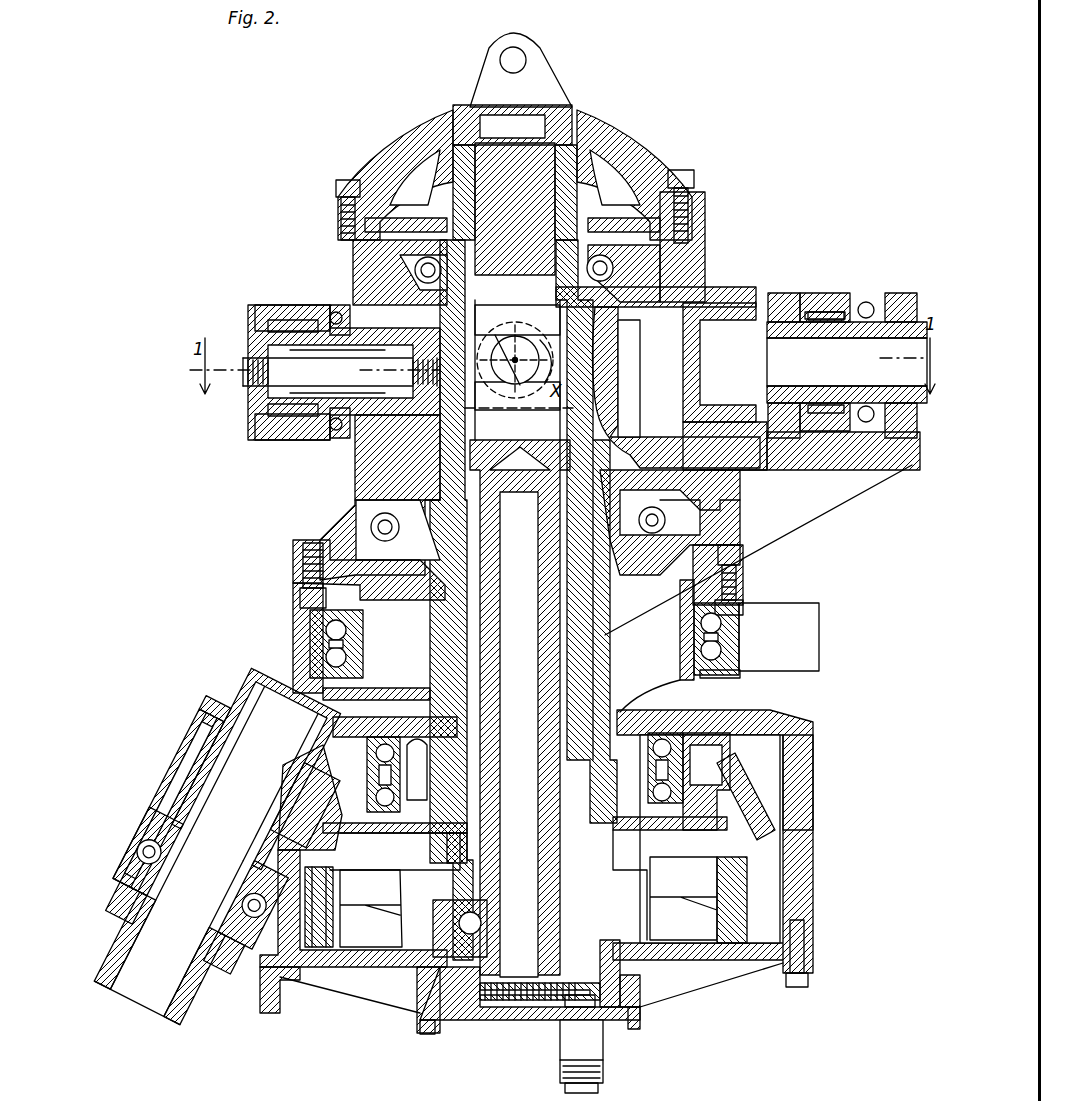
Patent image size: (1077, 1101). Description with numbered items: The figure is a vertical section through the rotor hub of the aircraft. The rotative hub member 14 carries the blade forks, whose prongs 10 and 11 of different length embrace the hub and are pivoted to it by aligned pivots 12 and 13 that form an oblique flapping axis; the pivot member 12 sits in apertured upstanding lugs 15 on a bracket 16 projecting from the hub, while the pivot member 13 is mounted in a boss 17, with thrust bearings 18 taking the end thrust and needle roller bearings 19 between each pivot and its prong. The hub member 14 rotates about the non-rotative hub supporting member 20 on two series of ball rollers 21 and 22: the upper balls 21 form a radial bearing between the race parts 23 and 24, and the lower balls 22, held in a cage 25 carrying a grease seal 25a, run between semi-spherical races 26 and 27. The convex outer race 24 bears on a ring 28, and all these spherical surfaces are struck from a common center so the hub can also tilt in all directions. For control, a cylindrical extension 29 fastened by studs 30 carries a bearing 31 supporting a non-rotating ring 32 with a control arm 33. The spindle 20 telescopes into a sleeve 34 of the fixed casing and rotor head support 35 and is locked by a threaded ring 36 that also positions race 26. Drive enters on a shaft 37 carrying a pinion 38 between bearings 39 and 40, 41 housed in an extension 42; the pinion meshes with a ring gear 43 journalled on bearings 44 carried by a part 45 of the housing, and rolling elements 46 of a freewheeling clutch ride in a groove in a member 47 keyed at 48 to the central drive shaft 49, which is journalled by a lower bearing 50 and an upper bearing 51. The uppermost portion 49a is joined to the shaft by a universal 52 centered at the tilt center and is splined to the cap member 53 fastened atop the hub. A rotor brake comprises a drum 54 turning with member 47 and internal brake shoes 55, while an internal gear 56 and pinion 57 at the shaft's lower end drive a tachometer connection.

The prong 10 is at (828, 292).
The prong 11 is at (255, 435).
The pivot member 12 is at (768, 337).
The pivot member 13 is at (330, 312).
The rotative hub member 14 is at (612, 343).
The apertured upstanding lug 15 is at (780, 292).
The bracket 16 is at (770, 480).
The boss 17 is at (362, 295).
The thrust bearing 18 is at (338, 305).
The needle roller bearing 19 is at (262, 306).
The non-rotative hub supporting member 20 is at (585, 444).
The ball rollers 21 is at (640, 266).
The ball rollers 22 is at (720, 513).
The race part 23 is at (595, 266).
The outer race 24 is at (600, 262).
The cage 25 is at (372, 512).
The grease seal 25a is at (398, 552).
The semi-spherical bearing race 26 is at (668, 500).
The semi-spherical bearing race 27 is at (715, 500).
The ring 28 is at (665, 240).
The cylindrical extension 29 is at (680, 612).
The stud 30 is at (745, 572).
The bearing 31 is at (710, 660).
The ring 32 is at (740, 655).
The arm 33 is at (812, 633).
The sleeve 34 is at (605, 690).
The fixed casing and rotor head support 35 is at (800, 878).
The ring 36 is at (612, 825).
The shaft 37 is at (190, 972).
The pinion 38 is at (205, 740).
The bearing 39 is at (260, 682).
The bearing 40 is at (160, 795).
The bearing 41 is at (148, 852).
The extension 42 is at (178, 758).
The ring gear 43 is at (310, 785).
The bearing 44 is at (670, 790).
The part of fixed housing structure 45 is at (415, 775).
The rolling element 46 is at (705, 855).
The member 47 is at (390, 838).
The key 48 is at (452, 868).
The central drive shaft 49 is at (496, 762).
The uppermost portion of drive shaft 49a is at (540, 170).
The bearing 50 is at (450, 918).
The bearing 51 is at (467, 607).
The universal 52 is at (520, 370).
The cap member 53 is at (615, 190).
The drum 54 is at (315, 940).
The brake shoe 55 is at (357, 935).
The internal gear 56 is at (497, 992).
The pinion 57 is at (570, 1005).